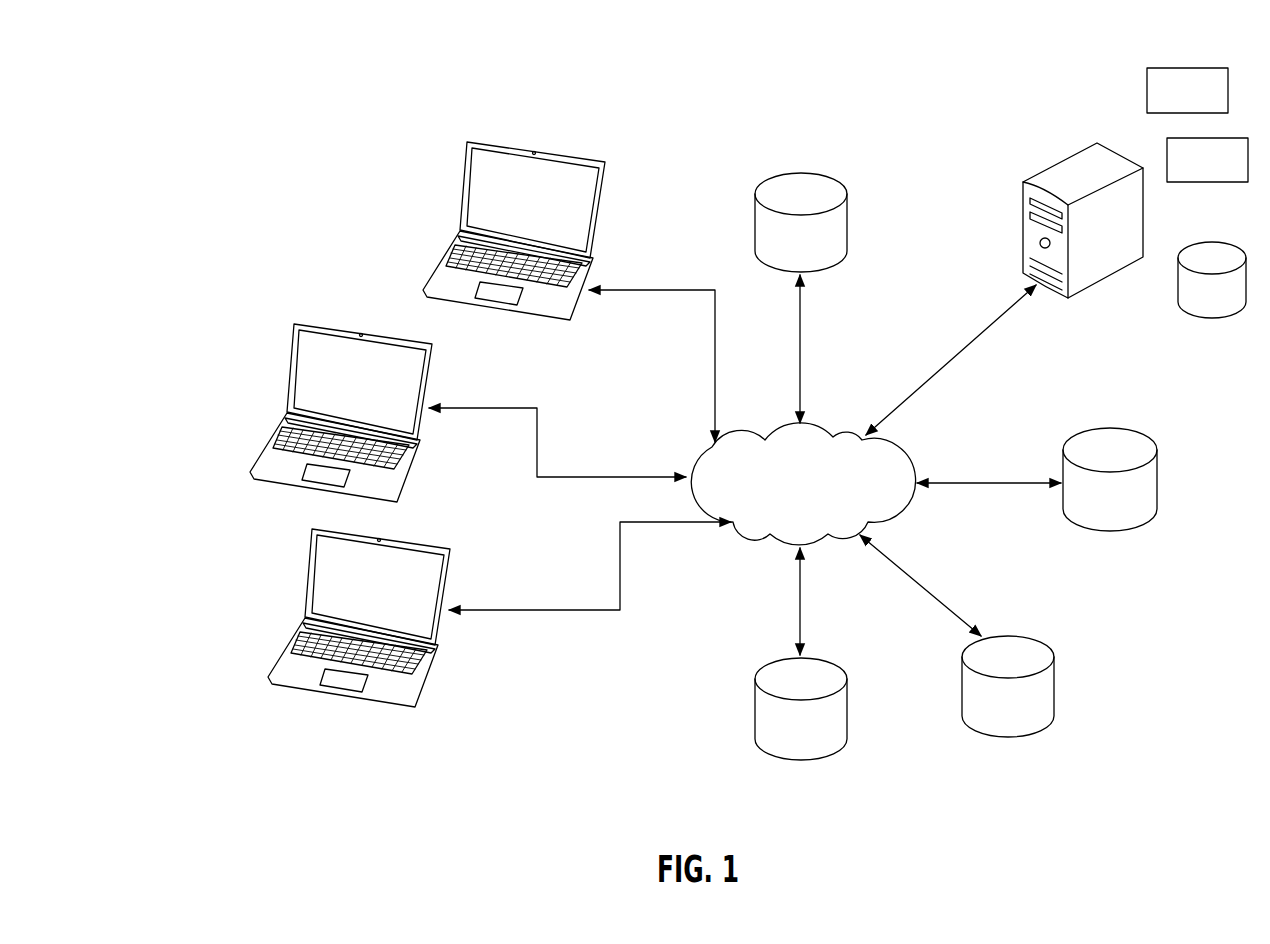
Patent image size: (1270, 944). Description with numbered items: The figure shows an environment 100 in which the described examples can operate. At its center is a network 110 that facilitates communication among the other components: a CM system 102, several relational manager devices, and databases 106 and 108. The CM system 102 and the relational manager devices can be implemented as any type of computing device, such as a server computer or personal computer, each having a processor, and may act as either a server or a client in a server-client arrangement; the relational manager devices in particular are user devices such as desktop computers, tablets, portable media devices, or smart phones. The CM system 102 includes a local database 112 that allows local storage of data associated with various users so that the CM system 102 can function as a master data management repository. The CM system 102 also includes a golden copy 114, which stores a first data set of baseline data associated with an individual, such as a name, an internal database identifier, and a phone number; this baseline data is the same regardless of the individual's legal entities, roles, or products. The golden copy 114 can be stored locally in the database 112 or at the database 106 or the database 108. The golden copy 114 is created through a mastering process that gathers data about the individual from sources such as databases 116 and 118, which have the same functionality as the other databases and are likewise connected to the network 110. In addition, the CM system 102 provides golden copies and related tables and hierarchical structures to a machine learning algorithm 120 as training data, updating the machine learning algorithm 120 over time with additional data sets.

The environment 100 is at (236, 72).
The CM system 102 is at (1038, 172).
The database 106 is at (1088, 511).
The database 108 is at (986, 719).
The network 110 is at (778, 499).
The local database 112 is at (1178, 270).
The golden copy (GC) 114 is at (1185, 178).
The database 116 is at (778, 255).
The database 118 is at (778, 743).
The machine learning algorithm 120 is at (1165, 108).